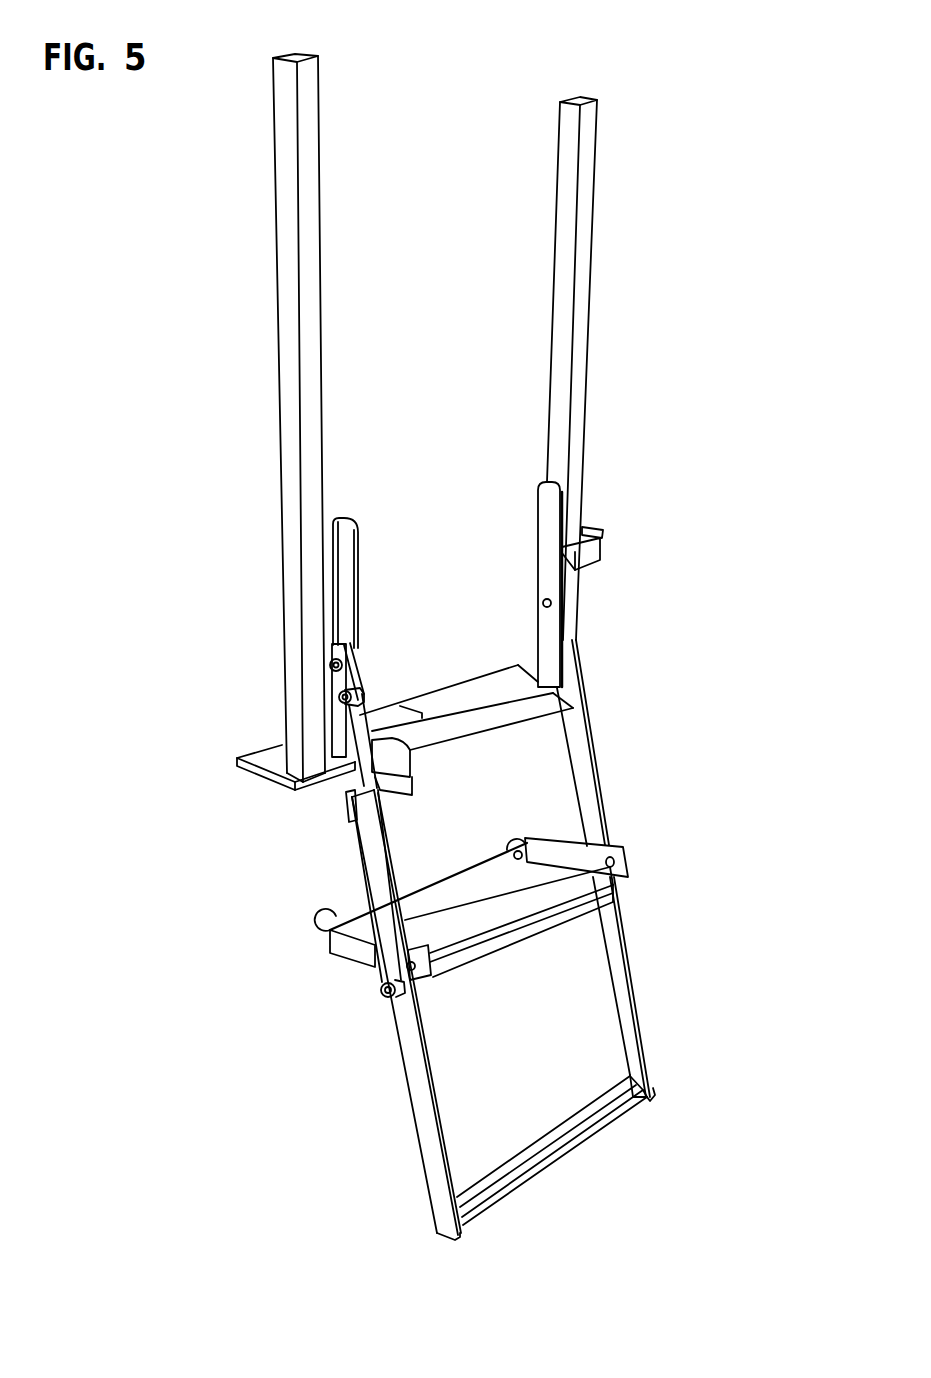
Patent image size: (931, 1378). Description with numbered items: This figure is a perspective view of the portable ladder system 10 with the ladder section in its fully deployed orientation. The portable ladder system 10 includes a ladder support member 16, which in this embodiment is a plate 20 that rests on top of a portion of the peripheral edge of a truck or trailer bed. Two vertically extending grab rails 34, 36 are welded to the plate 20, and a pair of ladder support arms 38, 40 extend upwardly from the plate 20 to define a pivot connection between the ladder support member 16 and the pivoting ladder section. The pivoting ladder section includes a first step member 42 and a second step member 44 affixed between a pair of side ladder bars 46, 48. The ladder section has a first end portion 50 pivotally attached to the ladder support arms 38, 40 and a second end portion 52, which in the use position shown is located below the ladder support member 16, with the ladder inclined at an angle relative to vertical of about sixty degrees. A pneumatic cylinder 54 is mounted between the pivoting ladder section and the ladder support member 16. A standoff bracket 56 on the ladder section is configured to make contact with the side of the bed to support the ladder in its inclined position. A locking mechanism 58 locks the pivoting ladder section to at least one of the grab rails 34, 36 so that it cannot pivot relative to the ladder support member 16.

The portable ladder system 10 is at (683, 136).
The ladder support member 16 is at (242, 690).
The plate 20 is at (484, 707).
The grab rail 34 is at (281, 270).
The grab rail 36 is at (594, 305).
The ladder support arm 38 is at (359, 570).
The ladder support arm 40 is at (534, 583).
The first step member 42 is at (533, 1172).
The second step member 44 is at (490, 958).
The side ladder bar 46 is at (432, 1140).
The side ladder bar 48 is at (636, 993).
The first end portion 50 is at (612, 663).
The second end portion 52 is at (692, 1107).
The pneumatic cylinder 54 is at (372, 878).
The standoff bracket 56 is at (463, 862).
The locking mechanism 58 is at (625, 516).